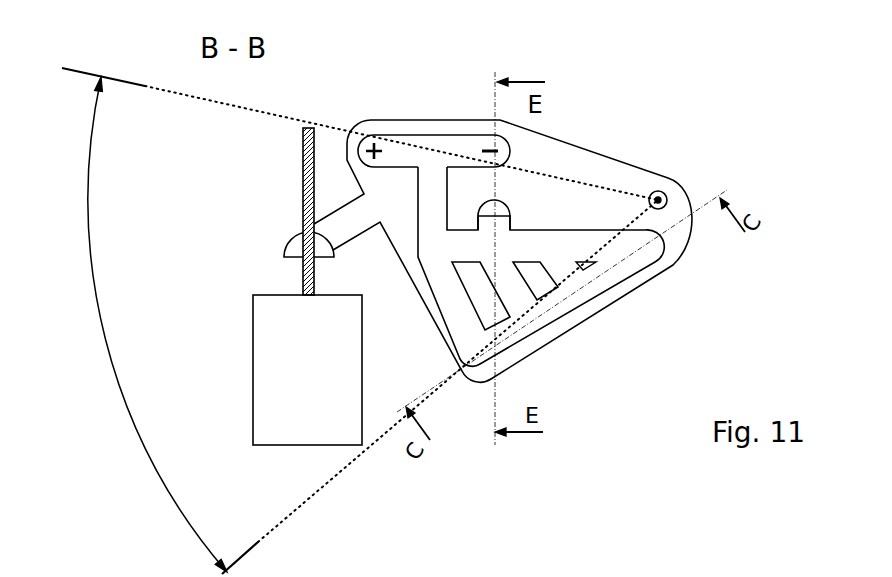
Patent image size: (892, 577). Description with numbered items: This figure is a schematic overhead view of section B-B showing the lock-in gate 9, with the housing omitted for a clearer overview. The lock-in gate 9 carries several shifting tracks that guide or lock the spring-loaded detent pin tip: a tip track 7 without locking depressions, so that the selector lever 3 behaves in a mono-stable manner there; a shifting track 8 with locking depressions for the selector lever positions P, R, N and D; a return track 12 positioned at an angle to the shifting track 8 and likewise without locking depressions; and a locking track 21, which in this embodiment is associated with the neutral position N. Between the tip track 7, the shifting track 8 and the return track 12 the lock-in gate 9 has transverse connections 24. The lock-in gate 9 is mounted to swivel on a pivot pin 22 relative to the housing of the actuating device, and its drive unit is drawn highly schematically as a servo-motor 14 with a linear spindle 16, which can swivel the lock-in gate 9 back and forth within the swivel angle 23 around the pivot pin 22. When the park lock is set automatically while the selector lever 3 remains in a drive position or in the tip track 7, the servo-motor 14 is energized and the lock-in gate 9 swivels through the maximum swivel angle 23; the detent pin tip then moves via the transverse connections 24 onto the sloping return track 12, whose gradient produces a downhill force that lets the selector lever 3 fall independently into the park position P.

The selector lever 3 is at (460, 576).
The tip track 7 is at (402, 150).
The shifting track 8 is at (522, 247).
The lock-in gate 9 is at (583, 165).
The return track 12 is at (558, 303).
The servo-motor 14 is at (305, 395).
The linear spindle 16 is at (308, 193).
The locking track 21 is at (493, 213).
The pivot pin 22 is at (653, 192).
The swivel angle 23 is at (157, 324).
The transverse connections 24 is at (509, 255).